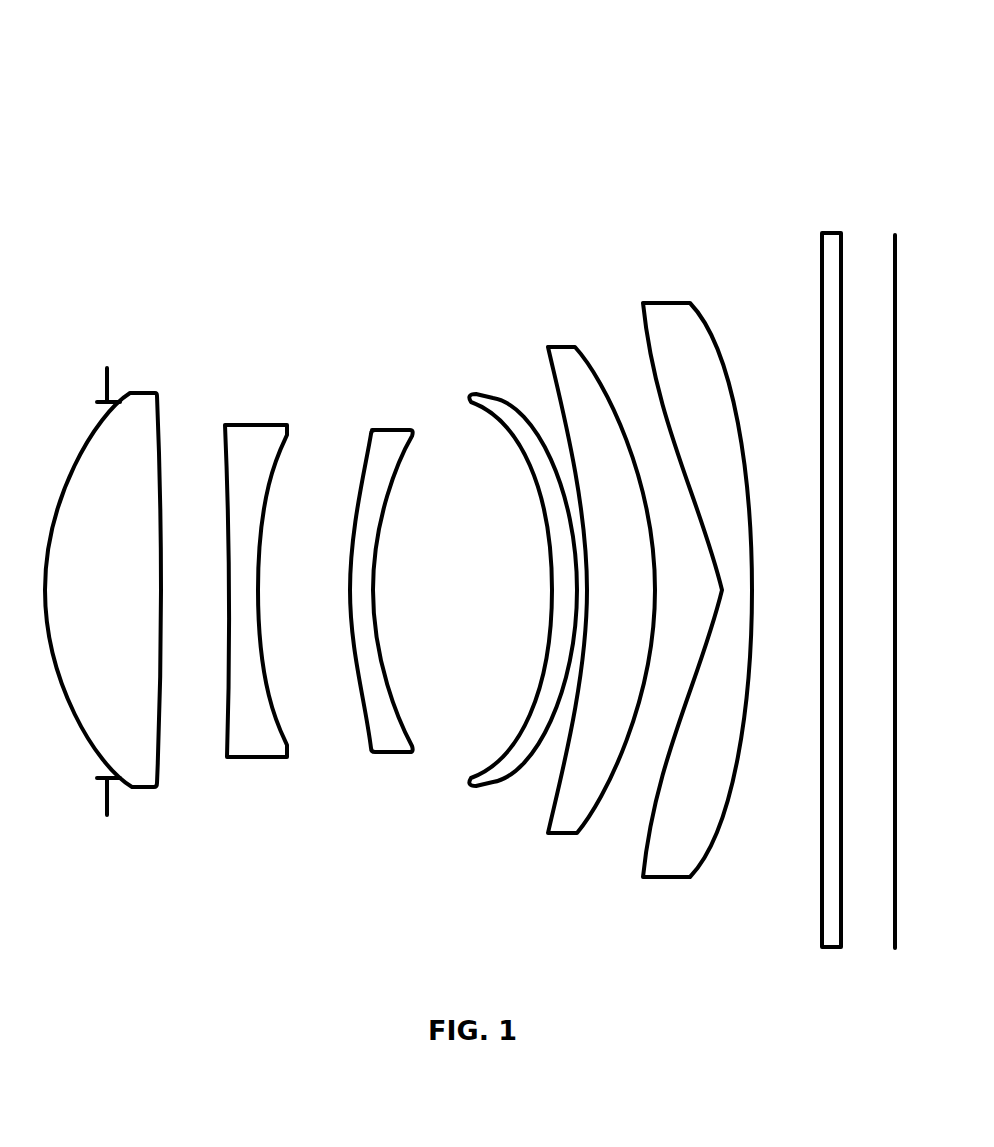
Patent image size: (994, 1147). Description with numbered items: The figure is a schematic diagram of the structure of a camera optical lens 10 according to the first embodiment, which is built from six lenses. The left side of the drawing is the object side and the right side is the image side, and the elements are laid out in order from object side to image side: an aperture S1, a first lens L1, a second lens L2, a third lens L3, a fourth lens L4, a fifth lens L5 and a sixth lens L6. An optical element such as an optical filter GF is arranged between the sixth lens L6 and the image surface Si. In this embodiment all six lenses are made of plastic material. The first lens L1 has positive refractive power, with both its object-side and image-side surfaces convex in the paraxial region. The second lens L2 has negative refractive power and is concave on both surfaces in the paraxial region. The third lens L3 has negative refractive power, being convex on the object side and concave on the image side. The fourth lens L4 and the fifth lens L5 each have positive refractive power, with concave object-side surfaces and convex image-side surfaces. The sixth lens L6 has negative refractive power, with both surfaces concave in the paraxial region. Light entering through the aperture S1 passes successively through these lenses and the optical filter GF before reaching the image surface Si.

The camera optical lens 10 is at (480, 38).
The aperture S1 is at (109, 578).
The first lens L1 is at (103, 578).
The second lens L2 is at (256, 578).
The third lens L3 is at (381, 577).
The fourth lens L4 is at (523, 578).
The fifth lens L5 is at (601, 576).
The sixth lens L6 is at (697, 577).
The optical filter GF is at (833, 577).
The image surface Si is at (895, 578).